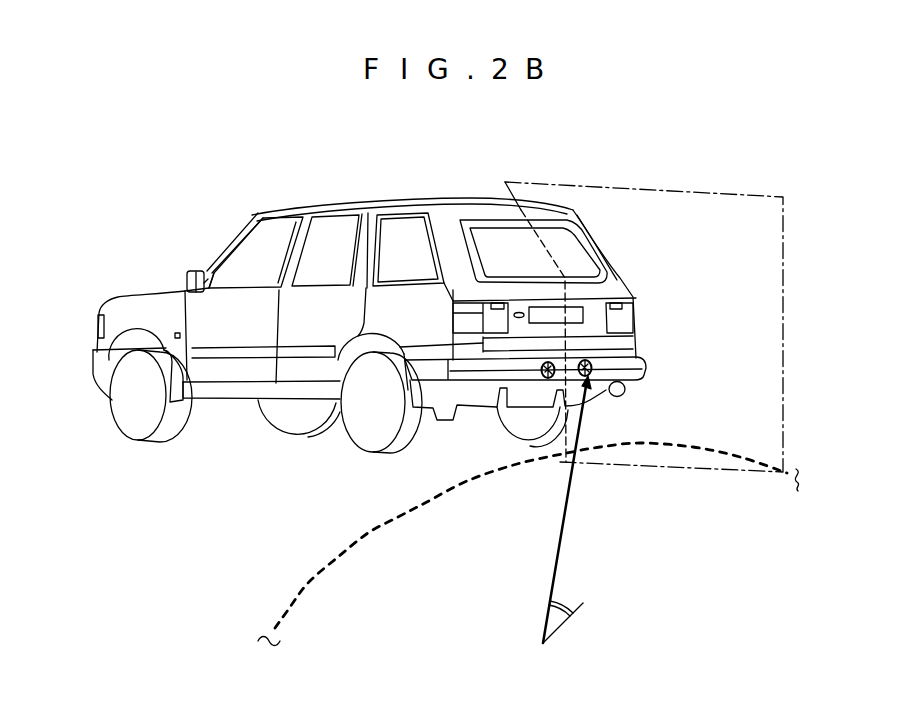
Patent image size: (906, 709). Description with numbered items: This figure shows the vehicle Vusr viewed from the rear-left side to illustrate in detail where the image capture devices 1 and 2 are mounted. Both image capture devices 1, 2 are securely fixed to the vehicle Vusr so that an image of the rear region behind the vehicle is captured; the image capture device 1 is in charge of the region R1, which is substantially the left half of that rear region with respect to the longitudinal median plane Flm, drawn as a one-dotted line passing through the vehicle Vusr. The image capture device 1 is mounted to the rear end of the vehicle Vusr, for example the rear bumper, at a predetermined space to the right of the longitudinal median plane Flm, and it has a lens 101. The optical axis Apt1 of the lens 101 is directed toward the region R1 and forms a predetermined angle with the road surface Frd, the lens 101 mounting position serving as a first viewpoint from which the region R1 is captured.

The image capture device 1 is at (592, 388).
The image capture device 2 is at (552, 366).
The lens 101 is at (592, 364).
The vehicle Vusr is at (431, 173).
The longitudinal median plane Flm is at (668, 188).
The region R1 is at (703, 448).
The optical axis Apt1 is at (557, 568).
The road surface Frd is at (478, 617).